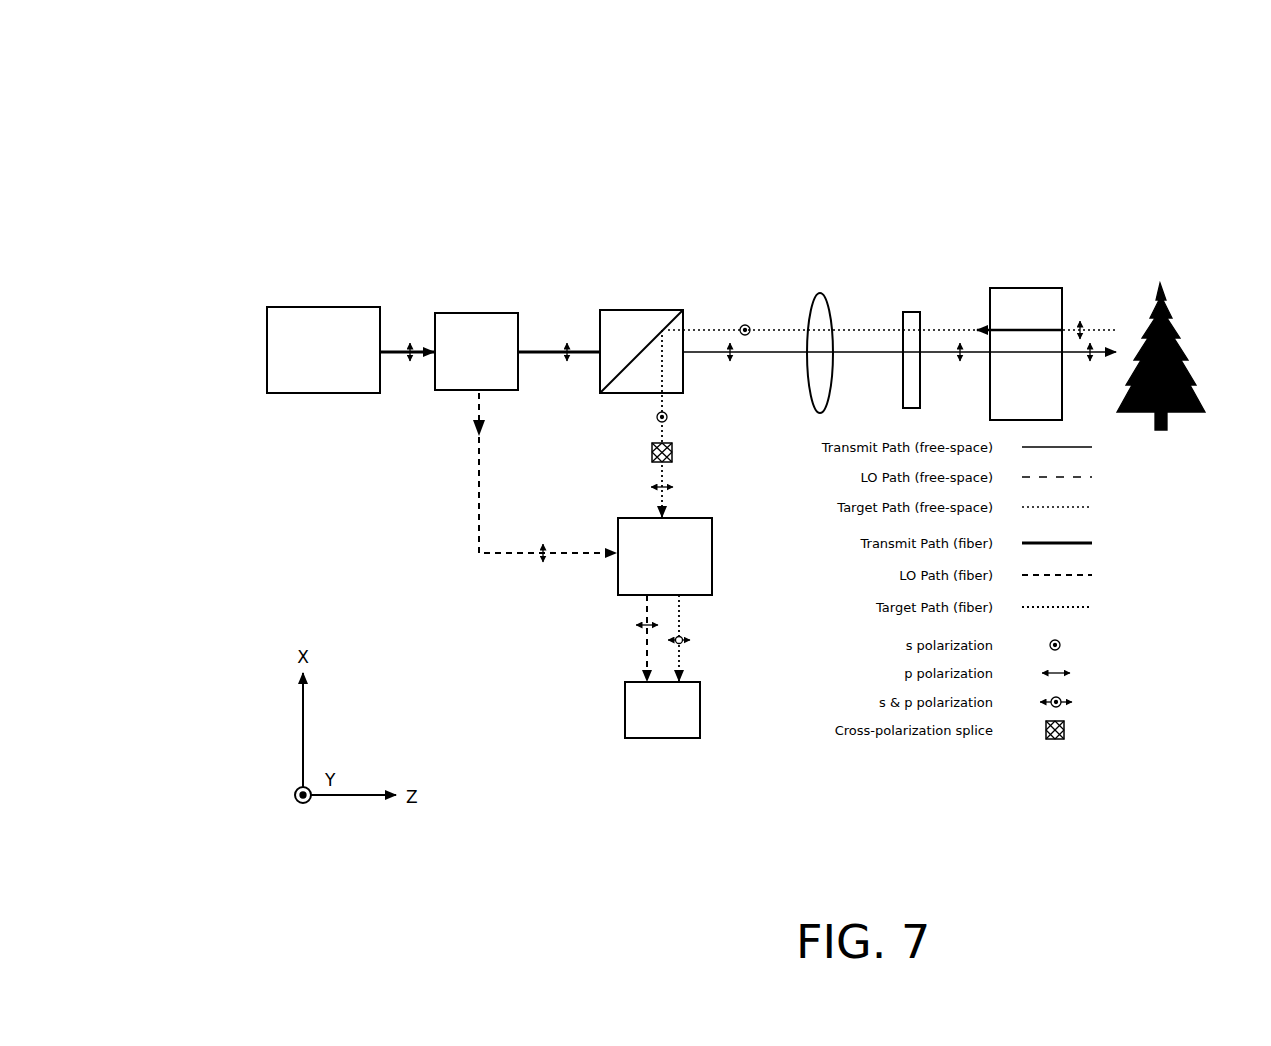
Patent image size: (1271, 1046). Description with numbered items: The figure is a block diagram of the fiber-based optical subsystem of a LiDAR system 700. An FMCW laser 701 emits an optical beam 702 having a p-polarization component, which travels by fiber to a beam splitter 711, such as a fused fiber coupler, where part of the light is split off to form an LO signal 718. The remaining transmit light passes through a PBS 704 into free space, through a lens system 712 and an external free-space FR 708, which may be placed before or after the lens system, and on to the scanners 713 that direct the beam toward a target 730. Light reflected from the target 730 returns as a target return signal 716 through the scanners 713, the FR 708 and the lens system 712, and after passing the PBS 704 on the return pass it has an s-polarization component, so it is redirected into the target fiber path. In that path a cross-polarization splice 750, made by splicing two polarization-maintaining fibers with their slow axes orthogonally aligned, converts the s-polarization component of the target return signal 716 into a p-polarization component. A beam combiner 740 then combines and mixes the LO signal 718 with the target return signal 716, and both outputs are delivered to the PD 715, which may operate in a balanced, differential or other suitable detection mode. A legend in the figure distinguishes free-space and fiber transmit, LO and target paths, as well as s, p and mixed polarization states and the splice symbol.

The LiDAR system 700 is at (160, 96).
The FMCW laser 701 is at (280, 309).
The optical beam 702 is at (408, 354).
The PBS 704 is at (600, 307).
The free-space FR 708 is at (920, 315).
The beam splitter 711 is at (477, 320).
The lens system 712 is at (810, 297).
The scanners 713 is at (1062, 300).
The PD 715 is at (698, 695).
The target return signal 716 is at (1023, 330).
The LO signal 718 is at (478, 400).
The target 730 is at (1176, 343).
The beam combiner 740 is at (715, 542).
The cross-polarization splice 750 is at (656, 445).